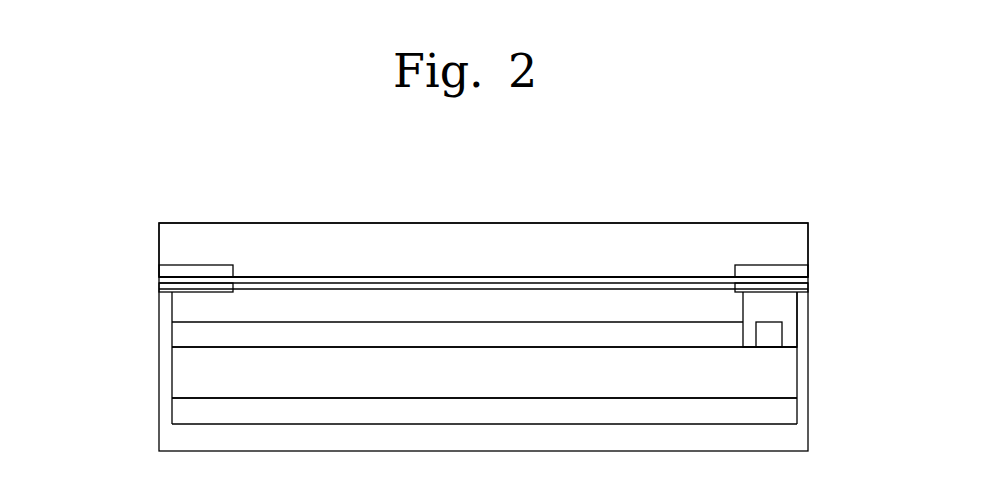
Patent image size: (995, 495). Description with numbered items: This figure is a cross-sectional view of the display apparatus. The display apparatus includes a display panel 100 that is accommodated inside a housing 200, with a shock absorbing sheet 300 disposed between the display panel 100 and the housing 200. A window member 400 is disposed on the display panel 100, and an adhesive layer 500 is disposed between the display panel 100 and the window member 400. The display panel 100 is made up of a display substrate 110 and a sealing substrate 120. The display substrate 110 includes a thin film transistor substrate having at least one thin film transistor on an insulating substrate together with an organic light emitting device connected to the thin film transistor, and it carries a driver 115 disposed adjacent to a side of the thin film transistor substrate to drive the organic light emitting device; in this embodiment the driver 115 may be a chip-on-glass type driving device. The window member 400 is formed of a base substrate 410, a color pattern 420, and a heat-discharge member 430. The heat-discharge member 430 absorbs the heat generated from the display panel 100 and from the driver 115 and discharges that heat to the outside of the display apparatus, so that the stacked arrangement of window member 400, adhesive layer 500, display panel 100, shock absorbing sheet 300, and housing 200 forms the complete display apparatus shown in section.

The display panel 100 is at (413, 358).
The display substrate 110 is at (180, 378).
The driver 115 is at (775, 333).
The sealing substrate 120 is at (180, 335).
The housing 200 is at (803, 438).
The shock absorbing sheet 300 is at (790, 412).
The window member 400 is at (418, 265).
The base substrate 410 is at (163, 241).
The color pattern 420 is at (163, 270).
The heat-discharge member 430 is at (163, 285).
The adhesive layer 500 is at (735, 305).